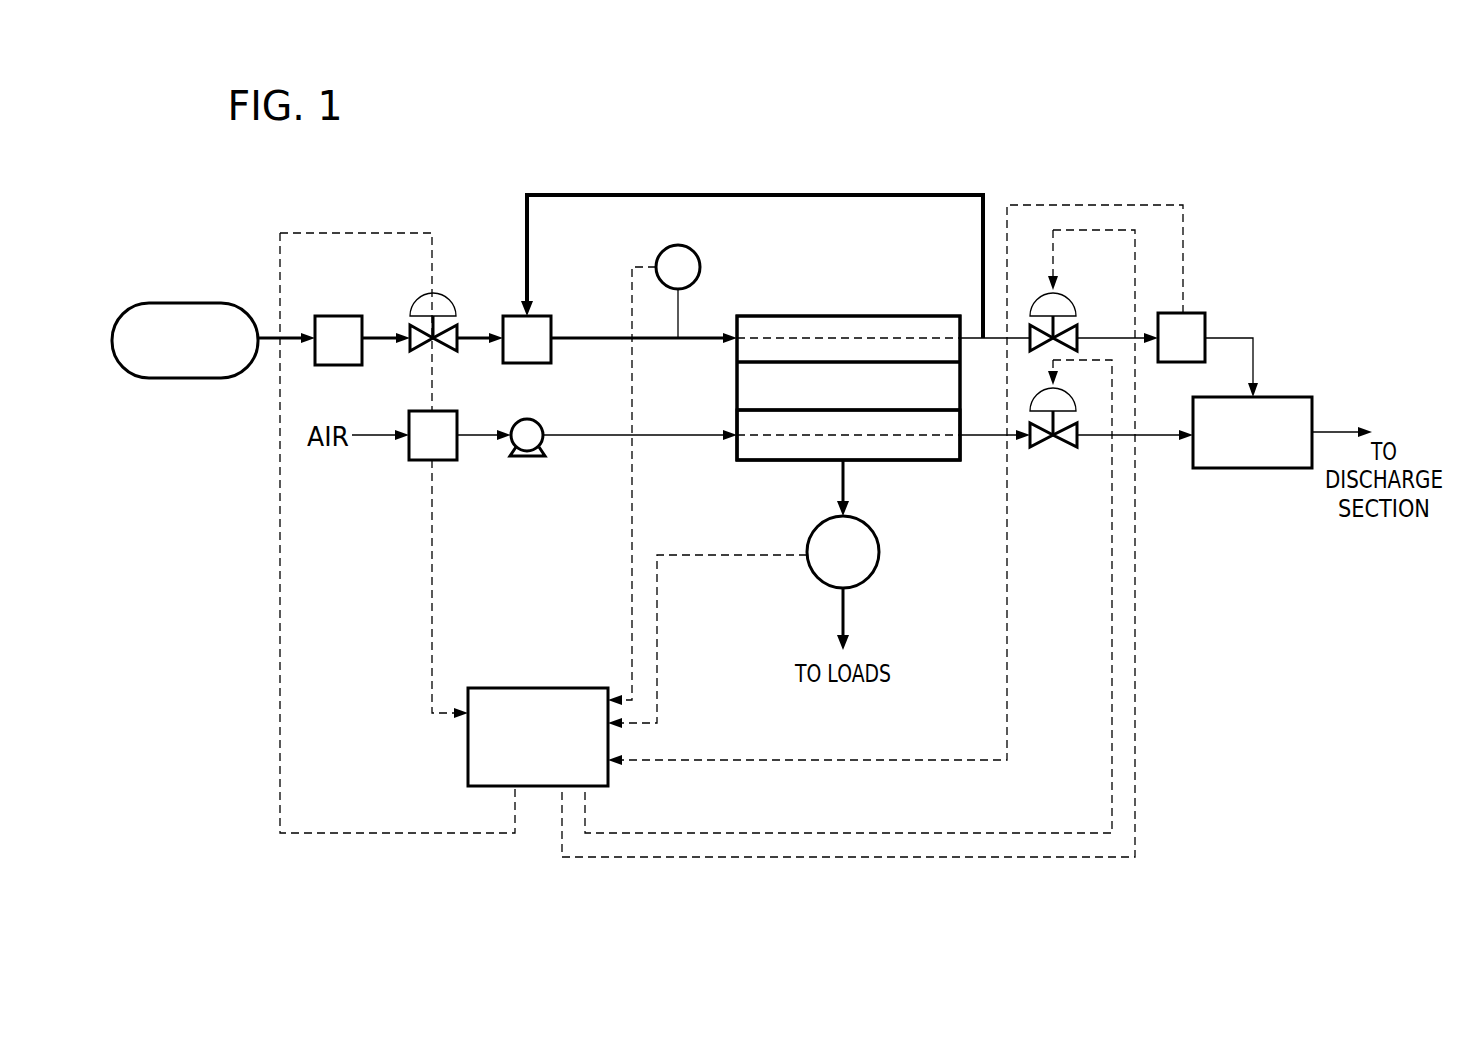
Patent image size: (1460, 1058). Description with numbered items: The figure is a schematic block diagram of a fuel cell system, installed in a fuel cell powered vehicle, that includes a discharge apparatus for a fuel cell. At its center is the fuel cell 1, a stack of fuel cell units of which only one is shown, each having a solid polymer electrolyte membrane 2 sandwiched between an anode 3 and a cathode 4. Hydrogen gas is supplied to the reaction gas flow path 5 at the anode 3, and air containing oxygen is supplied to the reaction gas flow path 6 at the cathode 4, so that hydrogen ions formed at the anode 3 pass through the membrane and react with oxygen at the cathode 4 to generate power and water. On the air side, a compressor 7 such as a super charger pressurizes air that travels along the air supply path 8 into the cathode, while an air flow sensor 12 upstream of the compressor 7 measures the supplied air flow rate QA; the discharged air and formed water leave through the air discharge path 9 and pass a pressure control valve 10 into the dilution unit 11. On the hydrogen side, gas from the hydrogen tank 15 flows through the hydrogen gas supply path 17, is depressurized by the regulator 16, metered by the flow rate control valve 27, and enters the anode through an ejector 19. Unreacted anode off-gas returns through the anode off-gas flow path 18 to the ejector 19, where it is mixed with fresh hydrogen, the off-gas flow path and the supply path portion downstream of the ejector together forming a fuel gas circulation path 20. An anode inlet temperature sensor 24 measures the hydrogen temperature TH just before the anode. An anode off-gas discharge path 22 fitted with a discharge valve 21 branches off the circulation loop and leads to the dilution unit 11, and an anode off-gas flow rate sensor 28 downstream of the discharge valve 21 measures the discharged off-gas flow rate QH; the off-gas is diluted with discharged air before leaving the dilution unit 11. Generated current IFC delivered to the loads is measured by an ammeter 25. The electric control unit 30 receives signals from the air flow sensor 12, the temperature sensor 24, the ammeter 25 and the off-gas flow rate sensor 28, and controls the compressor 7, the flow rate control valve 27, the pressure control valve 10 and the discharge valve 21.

The fuel cell 1 is at (890, 316).
The solid polymer electrolyte membrane 2 is at (760, 385).
The anode 3 is at (948, 325).
The cathode 4 is at (877, 445).
The reaction gas flow path 5 is at (812, 338).
The reaction gas flow path 6 is at (778, 445).
The compressor 7 is at (538, 423).
The air supply path 8 is at (605, 437).
The air discharge path 9 is at (995, 437).
The pressure control valve 10 is at (1063, 437).
The dilution unit 11 is at (1253, 468).
The air flow sensor 12 is at (420, 460).
The hydrogen tank 15 is at (150, 303).
The regulator 16 is at (325, 316).
The hydrogen gas supply path 17 is at (268, 338).
The anode off-gas flow path 18 is at (678, 193).
The ejector 19 is at (503, 355).
The fuel gas circulation path 20 is at (818, 193).
The discharge valve 21 is at (1063, 300).
The anode off-gas discharge path 22 is at (995, 340).
The anode inlet temperature sensor 24 is at (700, 267).
The ammeter 25 is at (815, 582).
The flow rate control valve 27 is at (445, 305).
The anode off-gas flow rate sensor 28 is at (1195, 313).
The electric control unit 30 is at (562, 688).